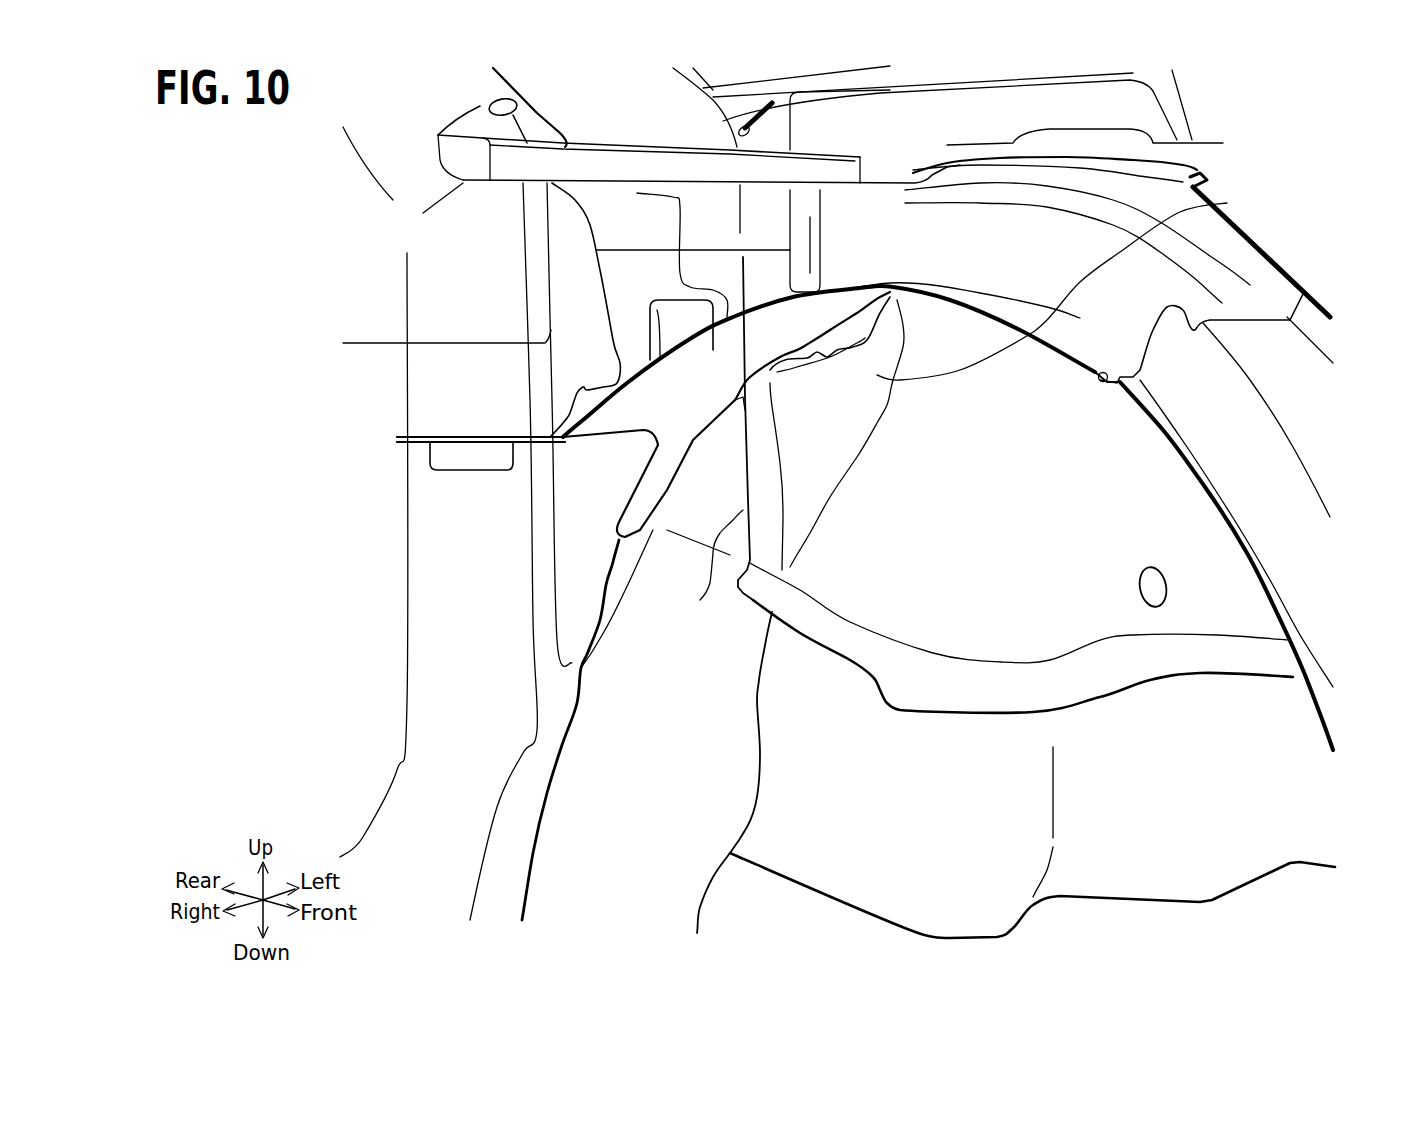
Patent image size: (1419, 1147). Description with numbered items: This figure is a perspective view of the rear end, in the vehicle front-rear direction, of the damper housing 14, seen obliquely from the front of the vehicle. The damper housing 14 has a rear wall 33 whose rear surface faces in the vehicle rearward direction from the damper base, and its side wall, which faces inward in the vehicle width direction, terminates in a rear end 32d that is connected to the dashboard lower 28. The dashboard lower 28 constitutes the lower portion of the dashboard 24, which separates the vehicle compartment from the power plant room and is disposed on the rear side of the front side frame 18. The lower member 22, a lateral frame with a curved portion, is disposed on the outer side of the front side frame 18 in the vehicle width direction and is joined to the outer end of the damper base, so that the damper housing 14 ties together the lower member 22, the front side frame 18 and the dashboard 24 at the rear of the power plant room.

The damper housing 14 is at (1156, 684).
The front side frame 18 is at (956, 952).
The lower member 22 is at (1287, 255).
The dashboard 24 is at (587, 750).
The dashboard lower 28 is at (680, 866).
The rear end 32d is at (752, 603).
The rear wall 33 is at (1227, 203).